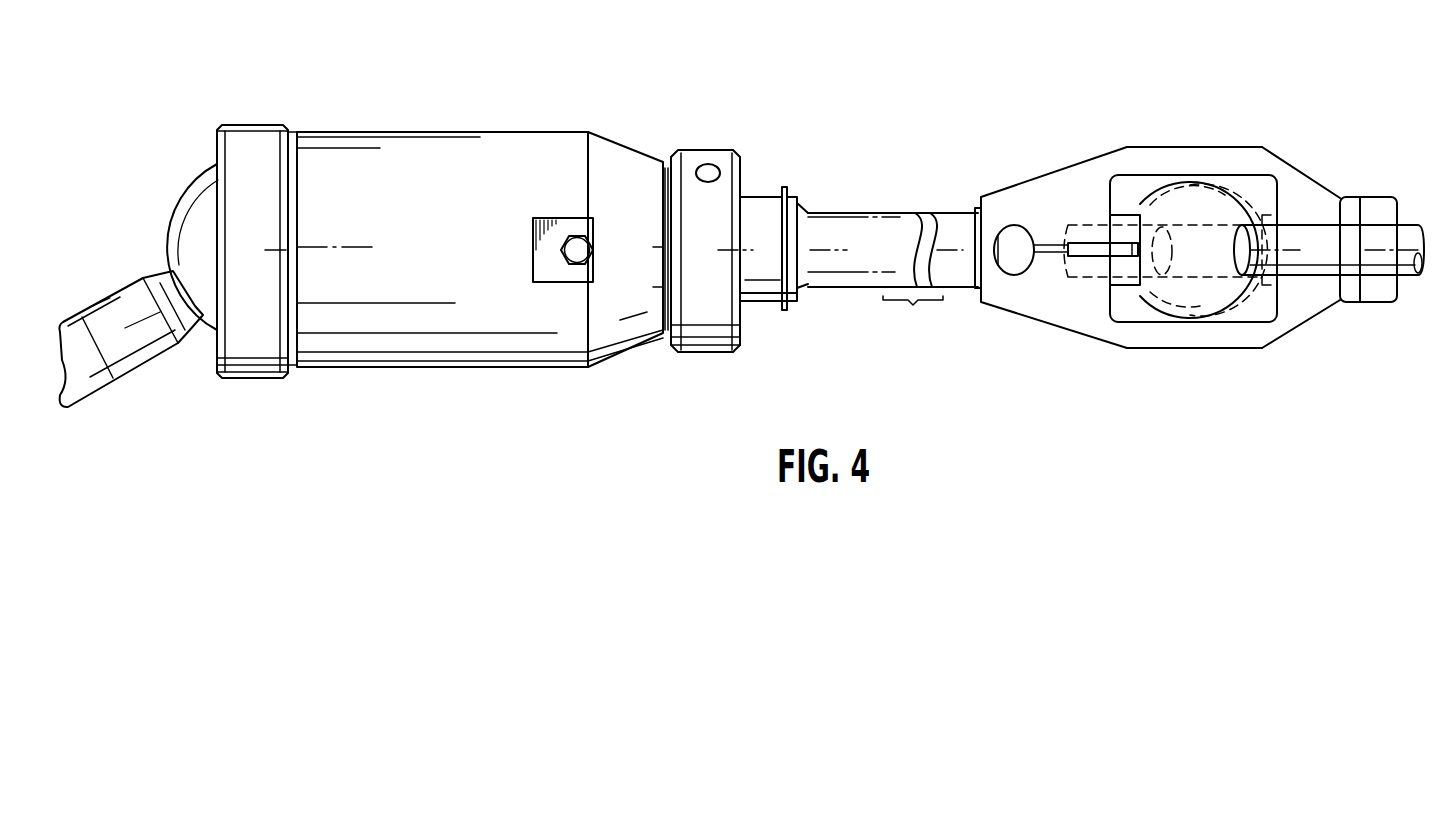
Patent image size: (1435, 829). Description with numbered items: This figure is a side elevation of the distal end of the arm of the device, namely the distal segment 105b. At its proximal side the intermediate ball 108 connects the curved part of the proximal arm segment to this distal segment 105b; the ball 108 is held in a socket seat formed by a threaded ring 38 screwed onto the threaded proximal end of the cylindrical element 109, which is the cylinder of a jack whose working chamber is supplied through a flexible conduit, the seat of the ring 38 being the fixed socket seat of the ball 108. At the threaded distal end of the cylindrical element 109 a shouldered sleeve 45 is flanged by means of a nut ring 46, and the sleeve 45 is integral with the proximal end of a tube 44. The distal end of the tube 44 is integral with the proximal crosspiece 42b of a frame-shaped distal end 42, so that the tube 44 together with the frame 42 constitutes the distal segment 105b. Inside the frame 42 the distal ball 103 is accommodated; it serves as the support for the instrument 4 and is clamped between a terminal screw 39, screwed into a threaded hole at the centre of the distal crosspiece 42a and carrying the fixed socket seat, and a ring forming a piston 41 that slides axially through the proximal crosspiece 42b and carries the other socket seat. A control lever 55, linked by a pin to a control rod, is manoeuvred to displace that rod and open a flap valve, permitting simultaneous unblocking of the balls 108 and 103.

The threaded ring 38 is at (263, 140).
The cylindrical element 109 is at (425, 157).
The intermediate ball 108 is at (186, 222).
The nut ring 46 is at (708, 164).
The shouldered sleeve 45 is at (764, 213).
The tube 44 is at (858, 235).
The distal segment of the arm 105b is at (964, 180).
The distal end of the distal segment configured as a frame 42 is at (1162, 160).
The distal crosspiece 42a is at (1305, 202).
The proximal crosspiece 42b is at (1055, 305).
The control lever 55 is at (1020, 242).
The piston 41 is at (1132, 267).
The ball 103 is at (1188, 297).
The terminal screw 39 is at (1377, 210).
The instrument 4 is at (1372, 263).